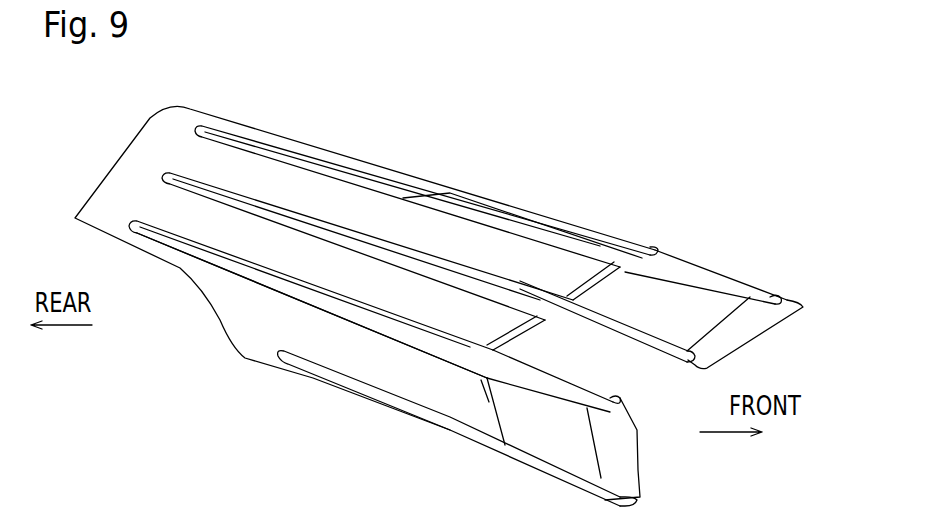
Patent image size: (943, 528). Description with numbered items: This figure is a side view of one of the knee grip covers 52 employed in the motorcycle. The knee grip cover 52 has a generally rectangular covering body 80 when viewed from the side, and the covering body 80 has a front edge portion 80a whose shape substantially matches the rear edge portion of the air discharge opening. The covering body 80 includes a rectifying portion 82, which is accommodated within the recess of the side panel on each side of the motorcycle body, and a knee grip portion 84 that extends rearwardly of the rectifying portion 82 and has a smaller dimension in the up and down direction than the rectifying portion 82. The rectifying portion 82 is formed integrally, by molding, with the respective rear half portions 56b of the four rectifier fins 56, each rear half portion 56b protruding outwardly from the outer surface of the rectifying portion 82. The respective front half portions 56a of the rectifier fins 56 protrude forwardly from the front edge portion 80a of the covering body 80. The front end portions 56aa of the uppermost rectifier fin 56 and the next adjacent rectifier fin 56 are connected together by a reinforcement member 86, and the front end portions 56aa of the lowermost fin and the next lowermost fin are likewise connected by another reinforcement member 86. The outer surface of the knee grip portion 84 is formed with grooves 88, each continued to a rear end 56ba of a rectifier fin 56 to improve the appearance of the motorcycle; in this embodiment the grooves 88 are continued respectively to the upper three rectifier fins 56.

The knee grip cover 52 is at (235, 110).
The covering body 80 is at (422, 176).
The rectifying portion 82 is at (447, 227).
The knee grip portion 84 is at (312, 183).
The front edge portion 80a is at (617, 272).
The groove 88 is at (300, 142).
The rectifier fin 56 is at (637, 264).
The front half portion 56a is at (703, 277).
The rear half portion 56b is at (533, 227).
The front end portion 56aa is at (773, 300).
The rear end 56ba is at (290, 297).
The reinforcement member 86 is at (715, 337).